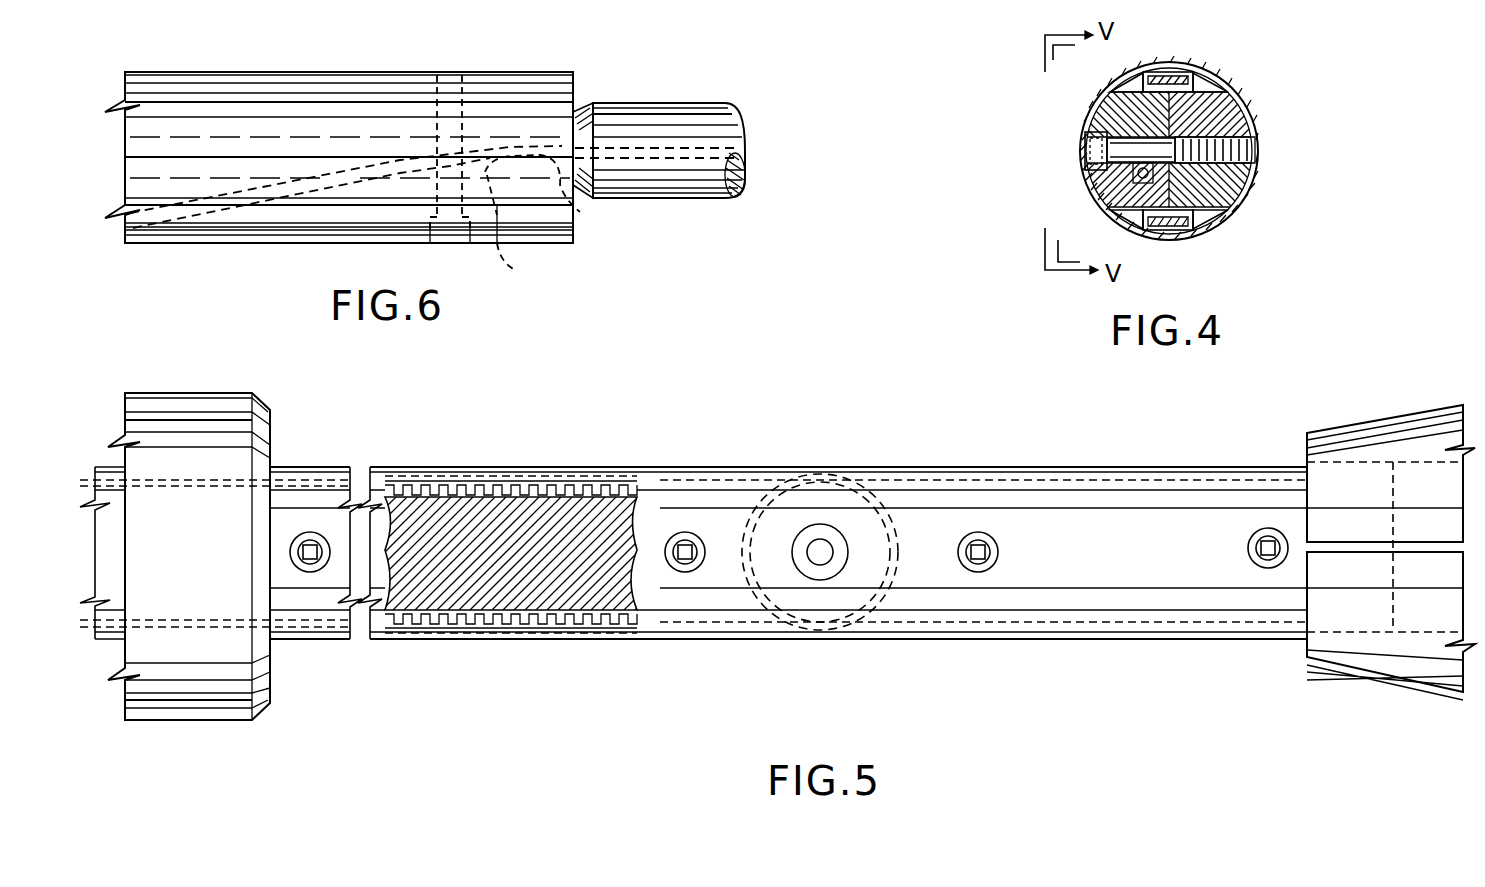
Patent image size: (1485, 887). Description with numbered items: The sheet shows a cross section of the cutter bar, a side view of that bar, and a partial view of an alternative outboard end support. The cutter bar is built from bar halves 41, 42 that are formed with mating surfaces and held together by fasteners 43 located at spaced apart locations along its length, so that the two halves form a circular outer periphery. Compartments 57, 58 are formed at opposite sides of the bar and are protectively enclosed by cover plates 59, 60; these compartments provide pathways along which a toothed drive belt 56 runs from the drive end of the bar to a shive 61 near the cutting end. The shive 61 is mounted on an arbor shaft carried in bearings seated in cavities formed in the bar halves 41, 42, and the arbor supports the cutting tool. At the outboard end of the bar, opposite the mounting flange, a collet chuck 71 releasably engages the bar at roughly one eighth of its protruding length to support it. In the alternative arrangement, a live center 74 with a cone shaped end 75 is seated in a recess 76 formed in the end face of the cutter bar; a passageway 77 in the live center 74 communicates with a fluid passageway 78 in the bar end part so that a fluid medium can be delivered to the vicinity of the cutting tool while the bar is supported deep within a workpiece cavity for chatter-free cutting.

In FIG. 4, the bar half 41 is at (1090, 108).
In FIG. 5, the bar half 41 is at (920, 468).
In FIG. 4, the bar half 42 is at (1090, 190).
In FIG. 4, the fasteners 43 is at (1085, 152).
In FIG. 5, the fasteners 43 is at (686, 532).
In FIG. 5, the drive belt 56 is at (500, 467).
In FIG. 4, the compartment 57 is at (1205, 212).
In FIG. 4, the compartment 58 is at (1205, 84).
In FIG. 4, the cover plate 59 is at (1188, 236).
In FIG. 5, the cover plate 59 is at (478, 640).
In FIG. 4, the cover plate 60 is at (1165, 72).
In FIG. 5, the cover plate 60 is at (428, 467).
In FIG. 5, the shive 61 is at (852, 618).
In FIG. 5, the collet chuck 71 is at (1382, 682).
In FIG. 6, the live center 74 is at (650, 103).
In FIG. 6, the cone shaped end 75 is at (575, 112).
In FIG. 6, the recess 76 is at (580, 212).
In FIG. 6, the passageway 77 is at (742, 162).
In FIG. 6, the fluid passageway 78 is at (518, 231).